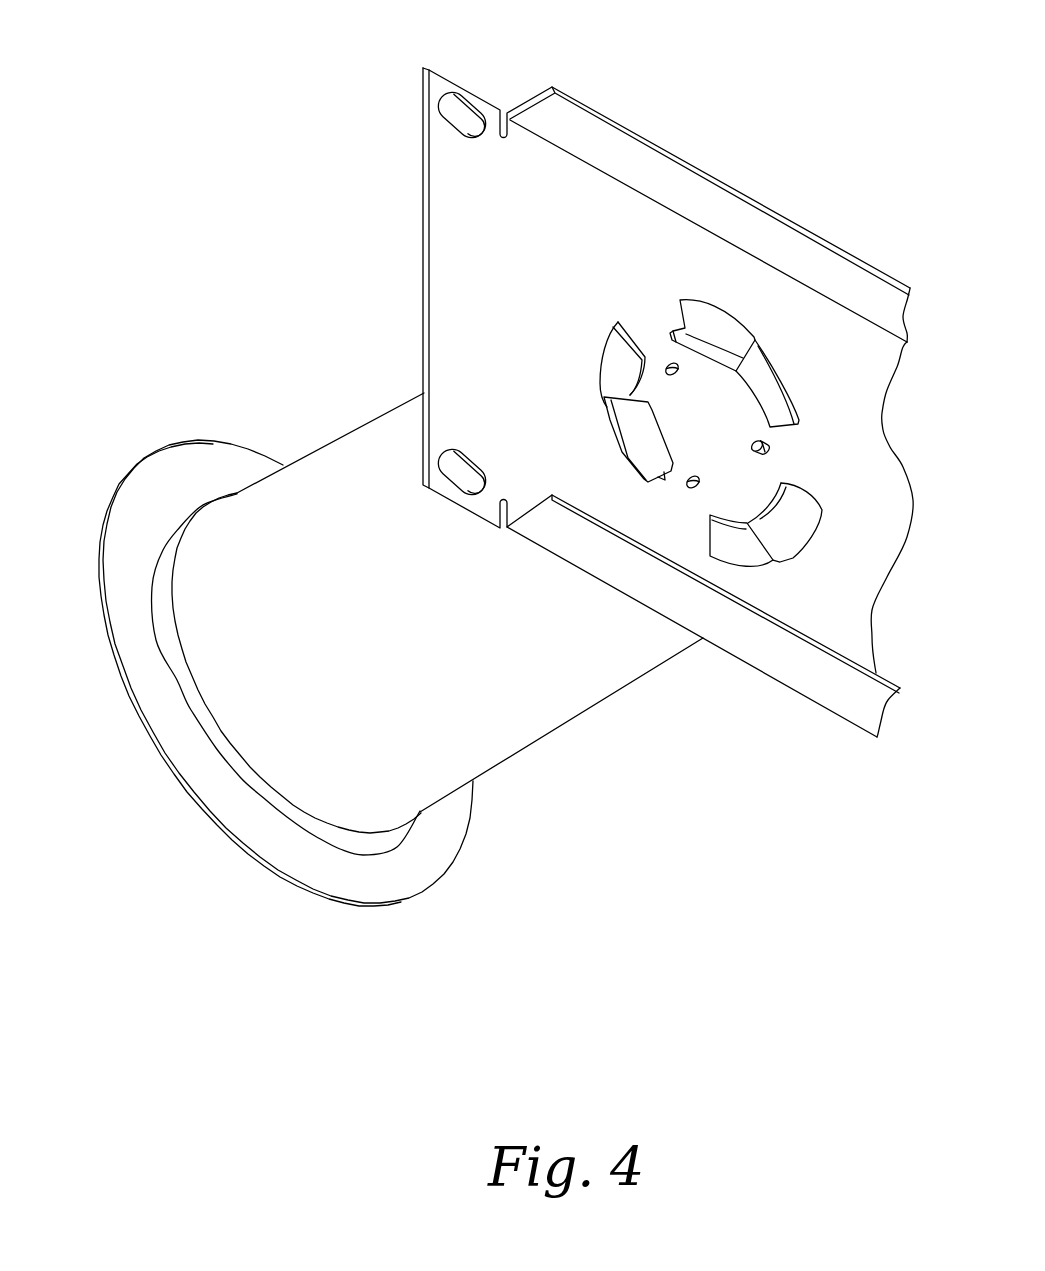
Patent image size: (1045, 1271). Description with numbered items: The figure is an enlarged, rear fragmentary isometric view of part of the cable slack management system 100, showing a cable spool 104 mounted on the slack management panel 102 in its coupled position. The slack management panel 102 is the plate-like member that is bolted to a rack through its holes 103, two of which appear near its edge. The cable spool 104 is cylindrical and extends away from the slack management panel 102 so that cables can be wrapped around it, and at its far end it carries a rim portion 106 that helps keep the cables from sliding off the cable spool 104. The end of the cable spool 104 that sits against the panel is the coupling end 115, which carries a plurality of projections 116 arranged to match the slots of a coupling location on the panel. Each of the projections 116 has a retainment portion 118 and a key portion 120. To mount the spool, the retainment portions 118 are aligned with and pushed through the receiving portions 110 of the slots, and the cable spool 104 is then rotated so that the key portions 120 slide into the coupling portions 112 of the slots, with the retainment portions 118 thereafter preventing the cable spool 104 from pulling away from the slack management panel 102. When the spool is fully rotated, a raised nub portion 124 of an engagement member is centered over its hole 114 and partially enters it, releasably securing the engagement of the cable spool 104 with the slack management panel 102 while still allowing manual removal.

The cable slack management system 100 is at (168, 92).
The slack management panel 102 is at (421, 177).
The holes 103 is at (461, 114).
The cable spool 104 is at (337, 477).
The rim portion 106 is at (180, 443).
The receiving portion 110 is at (604, 360).
The coupling portion 112 is at (712, 356).
The hole 114 is at (764, 455).
The coupling end 115 is at (770, 398).
The projections 116 is at (693, 280).
The retainment portion 118 is at (728, 330).
The key portion 120 is at (673, 335).
The nub portion 124 is at (767, 445).